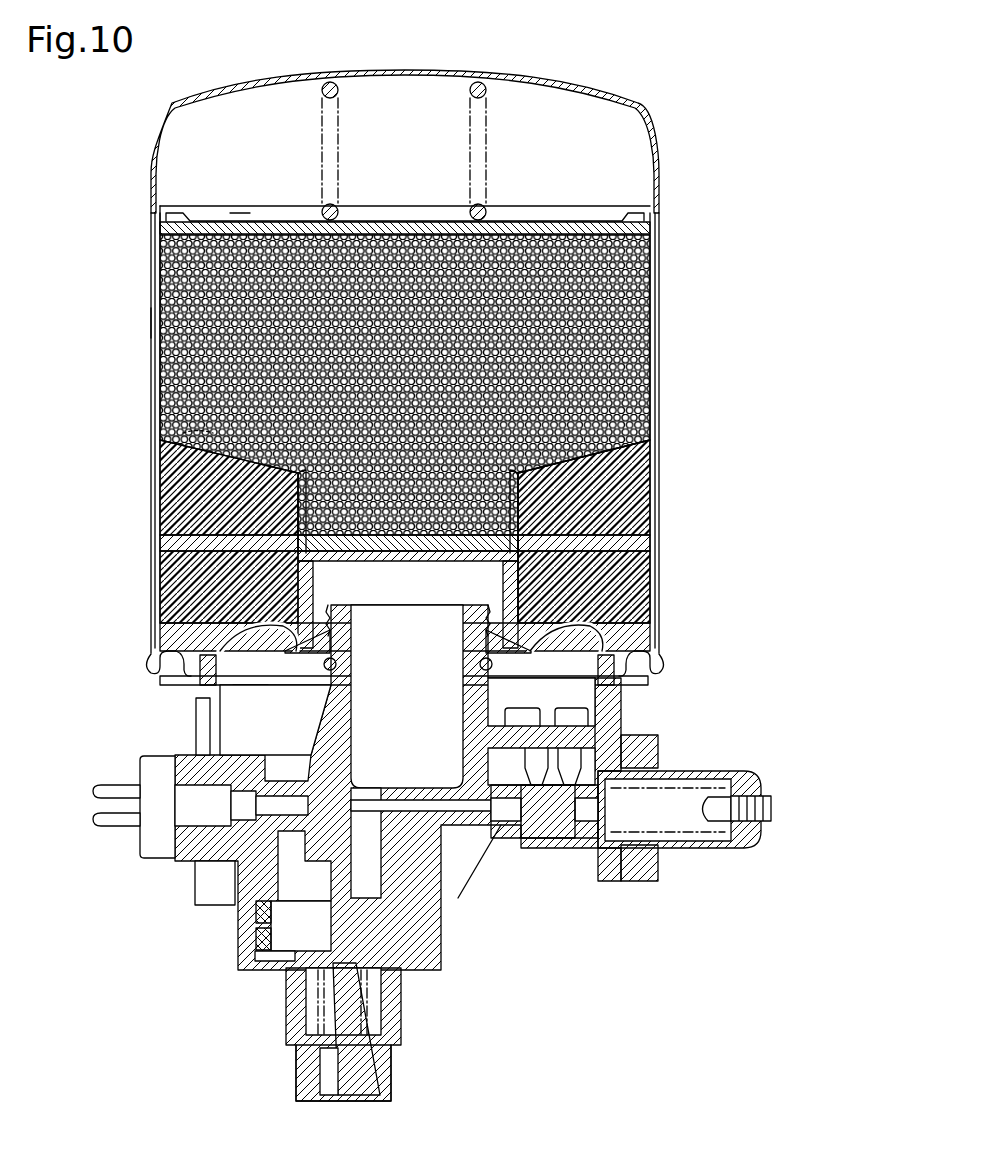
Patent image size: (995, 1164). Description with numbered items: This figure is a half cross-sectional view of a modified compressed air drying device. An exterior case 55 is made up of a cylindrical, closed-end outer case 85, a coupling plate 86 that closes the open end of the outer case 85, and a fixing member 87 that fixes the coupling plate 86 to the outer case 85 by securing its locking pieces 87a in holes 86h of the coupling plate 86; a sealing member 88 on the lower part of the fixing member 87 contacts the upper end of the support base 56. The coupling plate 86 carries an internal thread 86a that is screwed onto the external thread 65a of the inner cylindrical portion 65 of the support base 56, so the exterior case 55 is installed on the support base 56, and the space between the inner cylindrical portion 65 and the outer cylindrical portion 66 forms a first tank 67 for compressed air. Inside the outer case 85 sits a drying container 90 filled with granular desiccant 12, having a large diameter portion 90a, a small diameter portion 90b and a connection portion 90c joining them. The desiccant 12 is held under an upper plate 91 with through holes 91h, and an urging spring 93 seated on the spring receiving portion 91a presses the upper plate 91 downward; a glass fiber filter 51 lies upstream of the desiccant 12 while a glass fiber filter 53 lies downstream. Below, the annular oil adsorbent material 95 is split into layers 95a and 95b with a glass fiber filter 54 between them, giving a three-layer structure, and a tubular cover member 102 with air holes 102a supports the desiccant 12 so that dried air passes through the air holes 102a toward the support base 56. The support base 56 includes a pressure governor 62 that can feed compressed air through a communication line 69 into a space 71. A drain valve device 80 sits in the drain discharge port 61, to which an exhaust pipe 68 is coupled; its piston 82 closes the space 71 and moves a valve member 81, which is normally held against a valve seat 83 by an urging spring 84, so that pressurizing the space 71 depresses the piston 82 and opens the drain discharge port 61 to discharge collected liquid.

The desiccant 12 is at (147, 316).
The first glass fiber filter 51 is at (152, 216).
The glass fiber filter 53 is at (152, 568).
The glass fiber filter 54 is at (152, 526).
The exterior case 55 is at (655, 178).
The support base 56 is at (622, 672).
The drain discharge port 61 is at (405, 962).
The pressure governor 62 is at (708, 763).
The inner cylindrical portion 65 is at (320, 716).
The external thread 65a is at (322, 612).
The outer cylindrical portion 66 is at (615, 722).
The first tank 67 is at (226, 720).
The exhaust pipe 68 is at (385, 1053).
The communication line 69 is at (420, 792).
The space 71 is at (368, 790).
The drain valve device 80 is at (482, 1002).
The valve member 81 is at (256, 950).
The piston 82 is at (302, 852).
The valve seat 83 is at (246, 922).
The urging spring 84 is at (300, 1000).
The outer case 85 is at (652, 480).
The coupling plate 86 is at (648, 626).
The internal thread 86a is at (476, 612).
The holes 86h is at (280, 650).
The fixing member 87 is at (160, 660).
The locking pieces 87a is at (250, 666).
The sealing member 88 is at (188, 692).
The drying container 90 is at (652, 232).
The large diameter portion 90a is at (652, 300).
The small diameter portion 90b is at (152, 474).
The connection portion 90c is at (148, 430).
The upper plate 91 is at (545, 196).
The spring receiving portion 91a is at (314, 200).
The through holes 91h is at (232, 200).
The urging spring 93 is at (332, 82).
The oil adsorbent material 95 is at (644, 550).
The oil adsorbent material 95a is at (644, 452).
The oil adsorbent material 95b is at (644, 586).
The cover member 102 is at (368, 546).
The air holes 102a is at (412, 550).